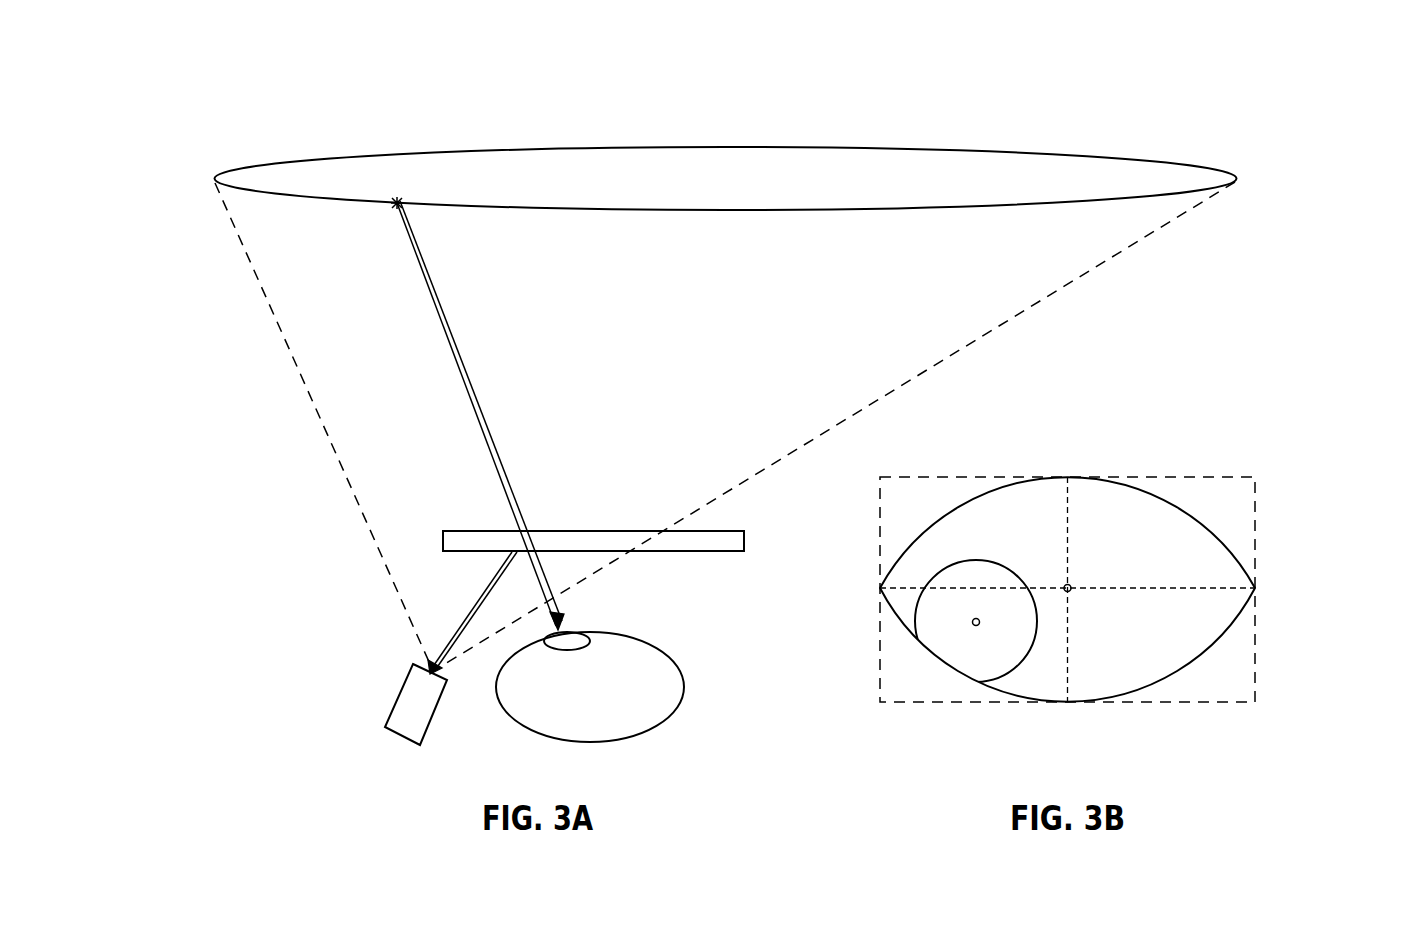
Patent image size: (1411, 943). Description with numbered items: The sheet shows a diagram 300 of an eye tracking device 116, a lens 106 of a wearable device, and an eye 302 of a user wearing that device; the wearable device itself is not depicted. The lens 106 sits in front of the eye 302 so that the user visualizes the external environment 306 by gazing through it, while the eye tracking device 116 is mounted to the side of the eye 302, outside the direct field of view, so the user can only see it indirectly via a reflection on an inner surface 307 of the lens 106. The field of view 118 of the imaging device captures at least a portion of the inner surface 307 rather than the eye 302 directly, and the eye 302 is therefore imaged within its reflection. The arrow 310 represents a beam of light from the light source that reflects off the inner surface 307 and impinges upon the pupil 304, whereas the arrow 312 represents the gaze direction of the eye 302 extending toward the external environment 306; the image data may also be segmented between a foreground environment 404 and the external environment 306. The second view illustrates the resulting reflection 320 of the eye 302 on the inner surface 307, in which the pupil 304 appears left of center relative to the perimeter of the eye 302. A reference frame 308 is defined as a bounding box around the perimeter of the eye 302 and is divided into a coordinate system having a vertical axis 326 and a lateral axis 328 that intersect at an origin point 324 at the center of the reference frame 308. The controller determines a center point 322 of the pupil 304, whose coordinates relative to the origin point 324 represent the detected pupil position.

In FIG. 3A, the diagram 300 is at (220, 78).
In FIG. 3A, the external environment 306 is at (527, 166).
In FIG. 3A, the field of view 118 is at (310, 398).
In FIG. 3A, the arrow 312 is at (465, 373).
In FIG. 3A, the lens 106 is at (573, 540).
In FIG. 3A, the inner surface 307 is at (463, 551).
In FIG. 3A, the foreground environment 404 is at (760, 545).
In FIG. 3A, the arrow 310 is at (470, 608).
In FIG. 3A, the eye tracking device 116 is at (402, 702).
In FIG. 3A, the eye 302 is at (663, 703).
In FIG. 3B, the eye 302 is at (1190, 532).
In FIG. 3A, the pupil 304 is at (580, 634).
In FIG. 3B, the pupil 304 is at (953, 632).
In FIG. 3B, the reference frame 308 is at (1255, 648).
In FIG. 3B, the reflection 320 is at (1153, 456).
In FIG. 3B, the vertical axis 326 is at (1067, 512).
In FIG. 3B, the lateral axis 328 is at (1215, 592).
In FIG. 3B, the origin point 324 is at (1070, 592).
In FIG. 3B, the center point 322 is at (979, 625).